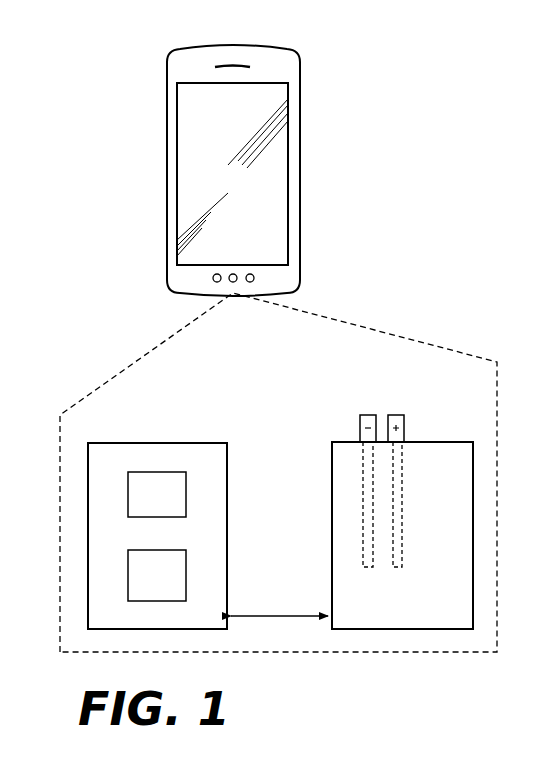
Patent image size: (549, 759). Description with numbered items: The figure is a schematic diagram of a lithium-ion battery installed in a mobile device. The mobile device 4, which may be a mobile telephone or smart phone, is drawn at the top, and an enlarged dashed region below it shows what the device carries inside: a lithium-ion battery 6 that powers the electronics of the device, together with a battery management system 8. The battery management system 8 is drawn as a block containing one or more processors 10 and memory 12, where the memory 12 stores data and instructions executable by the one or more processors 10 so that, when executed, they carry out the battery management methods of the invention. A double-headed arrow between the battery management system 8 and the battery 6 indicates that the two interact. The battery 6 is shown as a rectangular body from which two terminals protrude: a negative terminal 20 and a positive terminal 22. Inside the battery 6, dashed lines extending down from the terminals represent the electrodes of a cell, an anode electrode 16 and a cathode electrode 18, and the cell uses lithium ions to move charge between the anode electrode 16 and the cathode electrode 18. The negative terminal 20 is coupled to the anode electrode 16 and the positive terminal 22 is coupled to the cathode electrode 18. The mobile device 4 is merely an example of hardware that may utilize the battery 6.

The mobile device 4 is at (329, 35).
The lithium-ion battery 6 is at (329, 574).
The battery management system 8 is at (231, 521).
The processors 10 is at (157, 494).
The memory 12 is at (157, 575).
The anode electrode 16 is at (363, 552).
The cathode electrode 18 is at (397, 568).
The negative terminal 20 is at (368, 415).
The positive terminal 22 is at (396, 415).